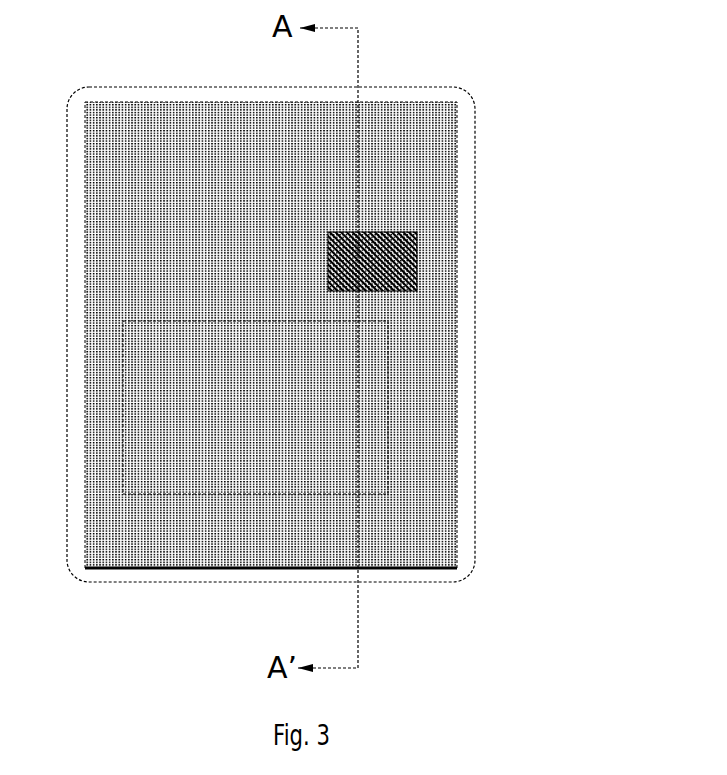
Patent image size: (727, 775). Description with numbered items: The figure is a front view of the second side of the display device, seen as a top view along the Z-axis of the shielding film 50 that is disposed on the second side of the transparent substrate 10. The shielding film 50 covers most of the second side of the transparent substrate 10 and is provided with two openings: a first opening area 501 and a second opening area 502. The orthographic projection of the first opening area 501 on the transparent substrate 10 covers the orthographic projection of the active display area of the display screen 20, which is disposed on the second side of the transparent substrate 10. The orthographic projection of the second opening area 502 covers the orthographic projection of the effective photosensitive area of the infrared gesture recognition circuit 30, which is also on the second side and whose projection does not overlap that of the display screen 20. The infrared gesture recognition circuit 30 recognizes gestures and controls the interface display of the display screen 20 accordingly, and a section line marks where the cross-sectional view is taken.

The transparent substrate 10 is at (468, 98).
The display screen 20 is at (385, 433).
The infrared gesture recognition circuit 30 is at (440, 306).
The shielding film 50 is at (457, 393).
The first opening area 501 is at (300, 490).
The second opening area 502 is at (418, 258).